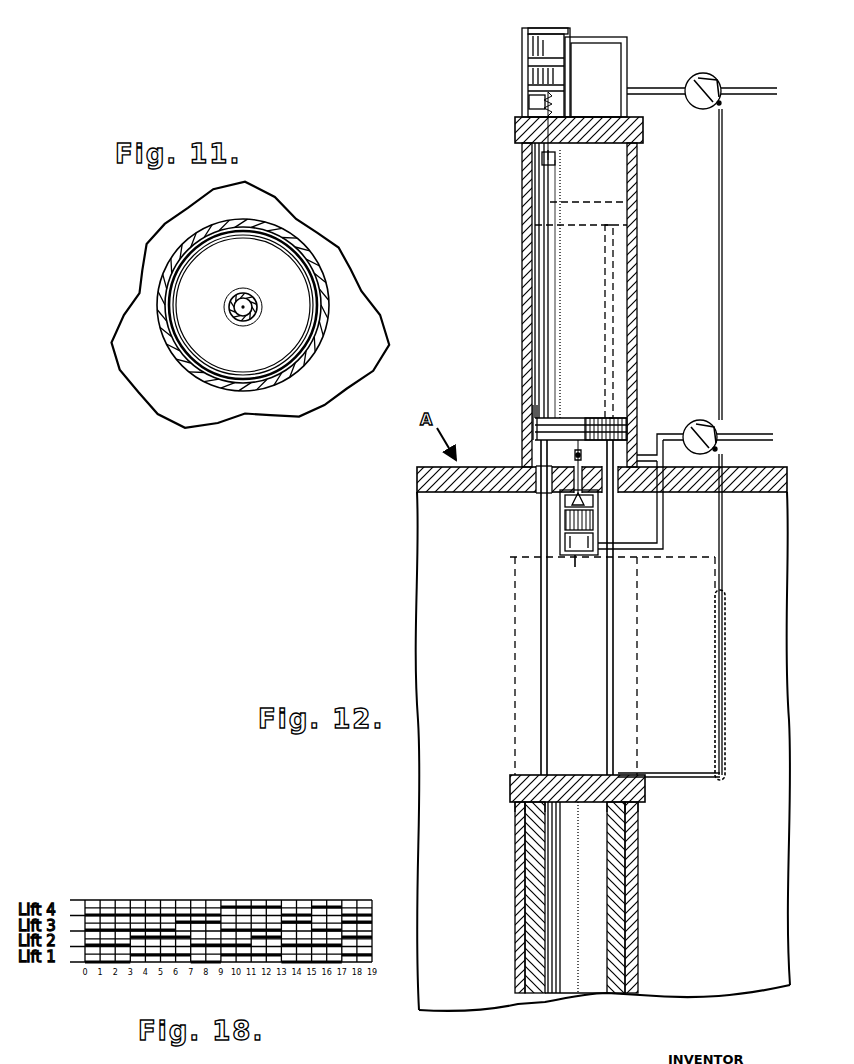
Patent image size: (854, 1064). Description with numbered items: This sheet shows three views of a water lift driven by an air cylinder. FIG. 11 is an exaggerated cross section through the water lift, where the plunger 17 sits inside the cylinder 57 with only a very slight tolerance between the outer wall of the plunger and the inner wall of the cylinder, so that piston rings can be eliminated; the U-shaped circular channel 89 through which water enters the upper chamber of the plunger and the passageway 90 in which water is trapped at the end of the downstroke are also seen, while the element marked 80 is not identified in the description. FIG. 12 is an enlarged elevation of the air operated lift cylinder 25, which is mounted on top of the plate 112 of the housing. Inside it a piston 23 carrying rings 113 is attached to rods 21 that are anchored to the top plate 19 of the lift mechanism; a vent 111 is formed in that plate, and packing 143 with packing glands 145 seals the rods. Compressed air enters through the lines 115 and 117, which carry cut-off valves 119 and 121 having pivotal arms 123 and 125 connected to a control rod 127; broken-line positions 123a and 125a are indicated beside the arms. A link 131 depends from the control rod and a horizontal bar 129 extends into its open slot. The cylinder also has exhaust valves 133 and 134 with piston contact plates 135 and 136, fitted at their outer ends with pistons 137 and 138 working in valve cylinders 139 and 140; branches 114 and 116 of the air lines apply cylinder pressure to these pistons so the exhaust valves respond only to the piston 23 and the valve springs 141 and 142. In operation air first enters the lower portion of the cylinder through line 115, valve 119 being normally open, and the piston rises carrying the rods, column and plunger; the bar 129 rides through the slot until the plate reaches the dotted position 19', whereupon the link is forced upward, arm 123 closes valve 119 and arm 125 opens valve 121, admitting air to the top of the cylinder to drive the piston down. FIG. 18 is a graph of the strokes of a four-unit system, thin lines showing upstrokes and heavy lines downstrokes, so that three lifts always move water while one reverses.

In FIG. 11, the plunger 17 is at (239, 379).
In FIG. 11, the cylinder 57 is at (169, 353).
In FIG. 11, the tubing 80 is at (240, 311).
In FIG. 11, the U-shaped circular channel 89 is at (190, 320).
In FIG. 11, the passageway 90 is at (231, 303).
In FIG. 12, the top plate 19 is at (588, 607).
In FIG. 12, the dotted line position of plate 19' is at (612, 666).
In FIG. 12, the rods 21 is at (540, 597).
In FIG. 12, the piston 23 is at (535, 430).
In FIG. 12, the air operated lift cylinder 25 is at (522, 288).
In FIG. 12, the vent 111 is at (536, 778).
In FIG. 12, the plate 112 is at (431, 468).
In FIG. 12, the rings 113 is at (535, 412).
In FIG. 12, the branch 114 is at (664, 518).
In FIG. 12, the air line 115 is at (660, 434).
In FIG. 12, the branch 116 is at (612, 38).
In FIG. 12, the air line 117 is at (655, 86).
In FIG. 12, the cut-off valve 119 is at (698, 419).
In FIG. 12, the cut-off valve 121 is at (705, 73).
In FIG. 12, the pivotal arm 123 is at (719, 449).
In FIG. 12, the valve handle position 123a is at (727, 423).
In FIG. 12, the pivotal arm 125 is at (722, 104).
In FIG. 12, the valve handle position 125a is at (718, 76).
In FIG. 12, the control rod 127 is at (723, 331).
In FIG. 12, the horizontal bar 129 is at (676, 779).
In FIG. 12, the link 131 is at (726, 645).
In FIG. 12, the exhaust valve 133 is at (566, 503).
In FIG. 12, the exhaust valve 134 is at (543, 107).
In FIG. 12, the piston contact plate 135 is at (579, 450).
In FIG. 12, the piston contact plate 136 is at (556, 163).
In FIG. 12, the piston 137 is at (562, 540).
In FIG. 12, the piston 138 is at (527, 63).
In FIG. 12, the valve cylinder 139 is at (575, 560).
In FIG. 12, the valve cylinder 140 is at (566, 30).
In FIG. 12, the valve spring 141 is at (554, 99).
In FIG. 12, the valve spring 142 is at (573, 458).
In FIG. 12, the packing 143 is at (540, 470).
In FIG. 12, the packing glands 145 is at (540, 497).